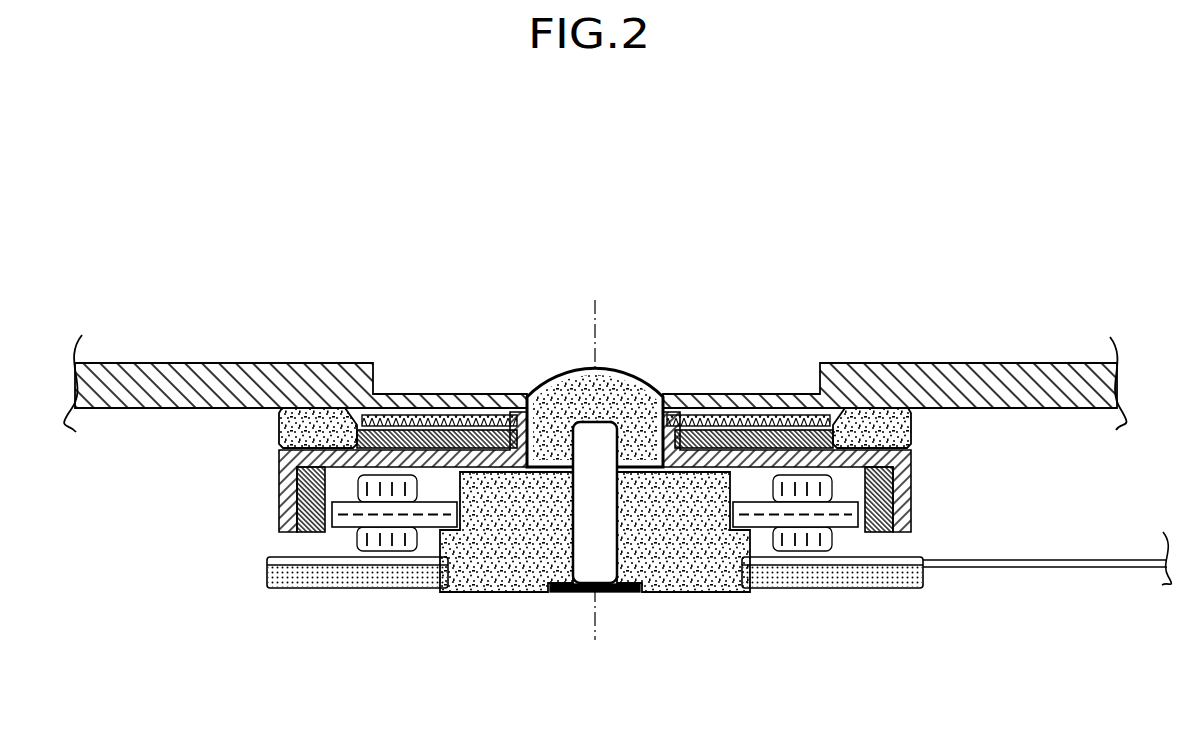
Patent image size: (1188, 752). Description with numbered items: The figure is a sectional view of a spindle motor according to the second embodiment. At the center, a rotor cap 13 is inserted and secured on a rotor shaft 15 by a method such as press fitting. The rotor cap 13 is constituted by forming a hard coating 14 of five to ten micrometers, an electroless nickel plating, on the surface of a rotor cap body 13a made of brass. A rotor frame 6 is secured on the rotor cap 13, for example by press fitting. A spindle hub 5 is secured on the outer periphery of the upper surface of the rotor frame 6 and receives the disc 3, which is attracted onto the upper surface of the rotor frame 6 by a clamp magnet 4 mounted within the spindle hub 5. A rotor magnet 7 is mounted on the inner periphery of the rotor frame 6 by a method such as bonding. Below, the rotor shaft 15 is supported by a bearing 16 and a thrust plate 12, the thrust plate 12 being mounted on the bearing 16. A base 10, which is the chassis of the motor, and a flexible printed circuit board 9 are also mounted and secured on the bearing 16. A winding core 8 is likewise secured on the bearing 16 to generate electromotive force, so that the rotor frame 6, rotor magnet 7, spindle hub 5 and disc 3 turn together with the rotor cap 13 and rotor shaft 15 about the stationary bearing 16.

The disc 3 is at (975, 382).
The clamp magnet 4 is at (775, 432).
The spindle hub 5 is at (912, 433).
The rotor frame 6 is at (912, 483).
The rotor magnet 7 is at (880, 533).
The winding core 8 is at (845, 522).
The flexible printed circuit board 9 is at (1055, 567).
The base 10 is at (857, 580).
The thrust plate 12 is at (618, 592).
The rotor cap 13 is at (723, 296).
The rotor cap body 13a is at (609, 385).
The hard coating 14 is at (648, 380).
The rotor shaft 15 is at (582, 447).
The bearing 16 is at (510, 568).